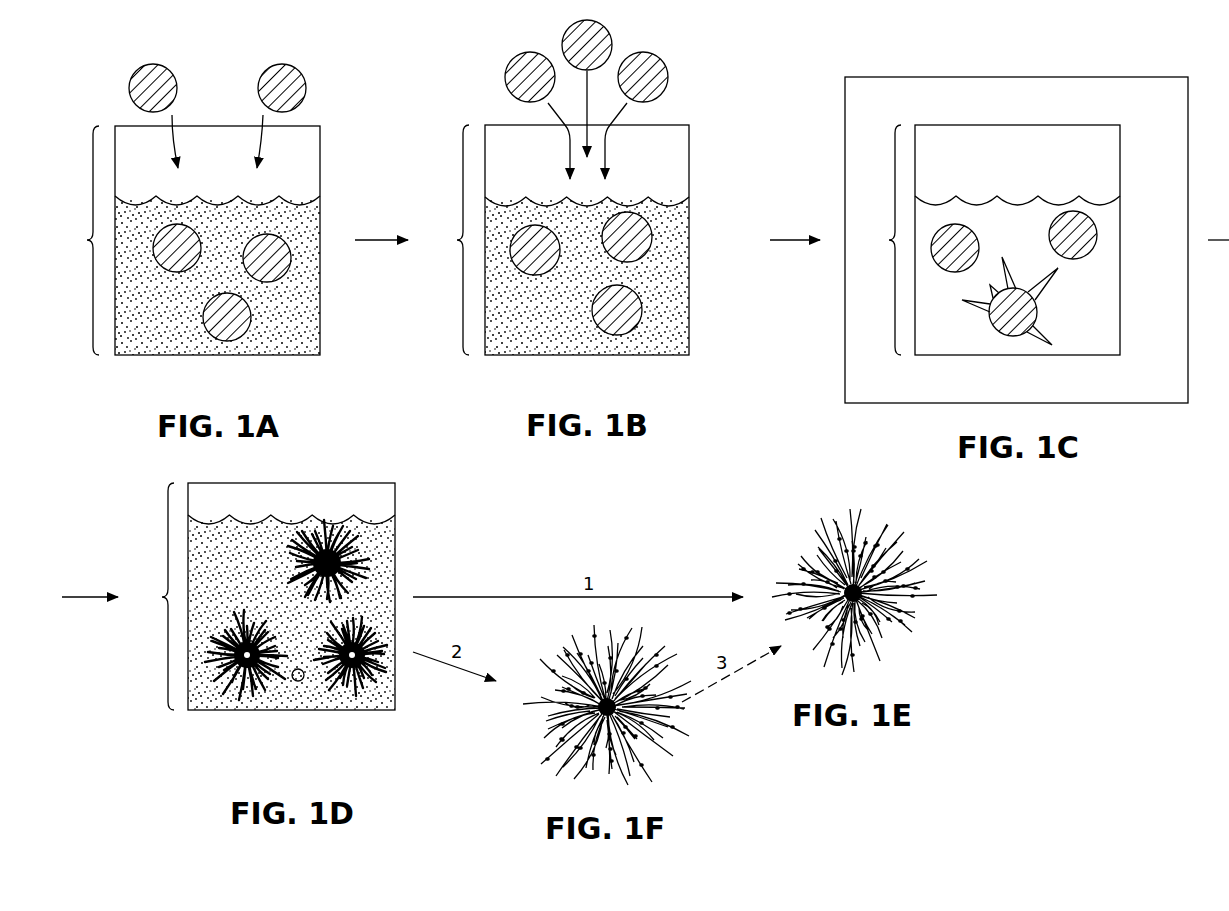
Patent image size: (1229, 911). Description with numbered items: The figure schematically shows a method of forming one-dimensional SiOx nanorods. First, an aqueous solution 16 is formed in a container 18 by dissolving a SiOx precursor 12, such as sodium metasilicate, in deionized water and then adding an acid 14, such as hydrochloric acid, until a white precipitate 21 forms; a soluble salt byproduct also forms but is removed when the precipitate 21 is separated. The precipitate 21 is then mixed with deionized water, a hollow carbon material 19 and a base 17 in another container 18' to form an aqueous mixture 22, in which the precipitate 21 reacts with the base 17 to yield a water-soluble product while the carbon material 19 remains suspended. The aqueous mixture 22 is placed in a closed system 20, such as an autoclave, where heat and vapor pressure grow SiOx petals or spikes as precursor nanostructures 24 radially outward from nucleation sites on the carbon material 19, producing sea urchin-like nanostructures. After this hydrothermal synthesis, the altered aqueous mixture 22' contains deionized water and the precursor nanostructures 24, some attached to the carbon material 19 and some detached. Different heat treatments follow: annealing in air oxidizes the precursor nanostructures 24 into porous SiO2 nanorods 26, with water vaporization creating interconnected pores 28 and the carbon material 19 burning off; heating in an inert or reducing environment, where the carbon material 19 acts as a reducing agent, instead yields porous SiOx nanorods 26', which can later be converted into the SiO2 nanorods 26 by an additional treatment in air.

In FIG. 1A, the SiOx precursor 12 is at (129, 88).
In FIG. 1A, the acid 14 is at (306, 88).
In FIG. 1A, the aqueous solution 16 is at (278, 312).
In FIG. 1B, the base 17 is at (611, 36).
In FIG. 1A, the container 18 is at (78, 240).
In FIG. 1B, the another container 18' is at (448, 240).
In FIG. 1C, the another container 18' is at (879, 240).
In FIG. 1D, the another container 18' is at (152, 596).
In FIG. 1B, the carbon material 19 is at (505, 76).
In FIG. 1C, the carbon material 19 is at (1097, 236).
In FIG. 1D, the carbon material 19 is at (250, 695).
In FIG. 1C, the closed system 20 is at (1095, 403).
In FIG. 1A, the white precipitate 21 is at (203, 318).
In FIG. 1B, the white precipitate 21 is at (668, 77).
In FIG. 1B, the aqueous mixture 22 is at (709, 319).
In FIG. 1C, the aqueous mixture 22 is at (1137, 321).
In FIG. 1D, the altered aqueous mixture 22' is at (354, 721).
In FIG. 1C, the precursor nanostructure 24 is at (1030, 333).
In FIG. 1D, the precursor nanostructure 24 is at (387, 627).
In FIG. 1E, the porous one-dimensional SiO2 nanorods 26 is at (880, 597).
In FIG. 1F, the porous one-dimensional SiOx nanorods 26' is at (576, 705).
In FIG. 1E, the pores 28 is at (907, 537).